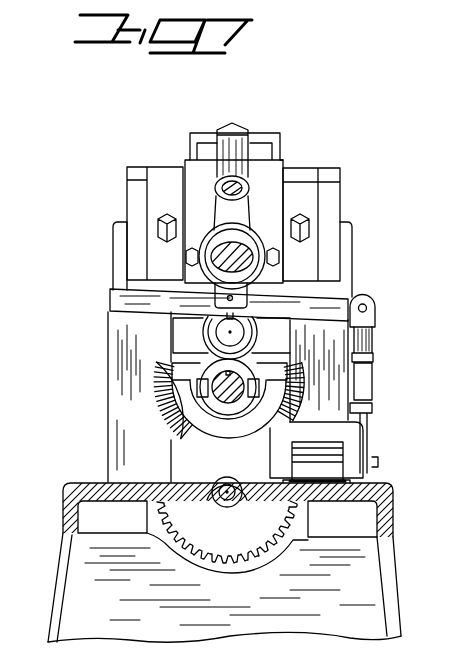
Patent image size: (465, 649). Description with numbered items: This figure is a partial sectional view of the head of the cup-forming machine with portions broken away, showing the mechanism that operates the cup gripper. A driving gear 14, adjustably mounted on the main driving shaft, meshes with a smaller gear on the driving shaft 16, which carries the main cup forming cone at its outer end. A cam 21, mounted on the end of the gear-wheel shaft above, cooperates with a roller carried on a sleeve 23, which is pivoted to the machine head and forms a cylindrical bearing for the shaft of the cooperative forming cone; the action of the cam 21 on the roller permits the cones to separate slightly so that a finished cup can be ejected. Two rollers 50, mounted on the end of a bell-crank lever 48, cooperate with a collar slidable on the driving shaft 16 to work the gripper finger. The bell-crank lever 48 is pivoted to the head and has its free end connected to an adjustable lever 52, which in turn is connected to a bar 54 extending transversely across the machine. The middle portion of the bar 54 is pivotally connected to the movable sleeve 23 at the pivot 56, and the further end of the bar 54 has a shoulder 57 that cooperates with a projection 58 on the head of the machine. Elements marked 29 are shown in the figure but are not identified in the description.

The driving gear 14 is at (227, 520).
The driving shaft 16 is at (240, 380).
The cam 21 is at (246, 333).
The sleeve 23 is at (242, 149).
The clamp blocks 29 is at (162, 187).
The bell-crank lever 48 is at (303, 433).
The rollers 50 is at (232, 400).
The adjustable lever 52 is at (368, 381).
The bar 54 is at (330, 307).
The pivotal connection 56 is at (236, 299).
The shoulder 57 is at (117, 287).
The projection 58 is at (120, 255).